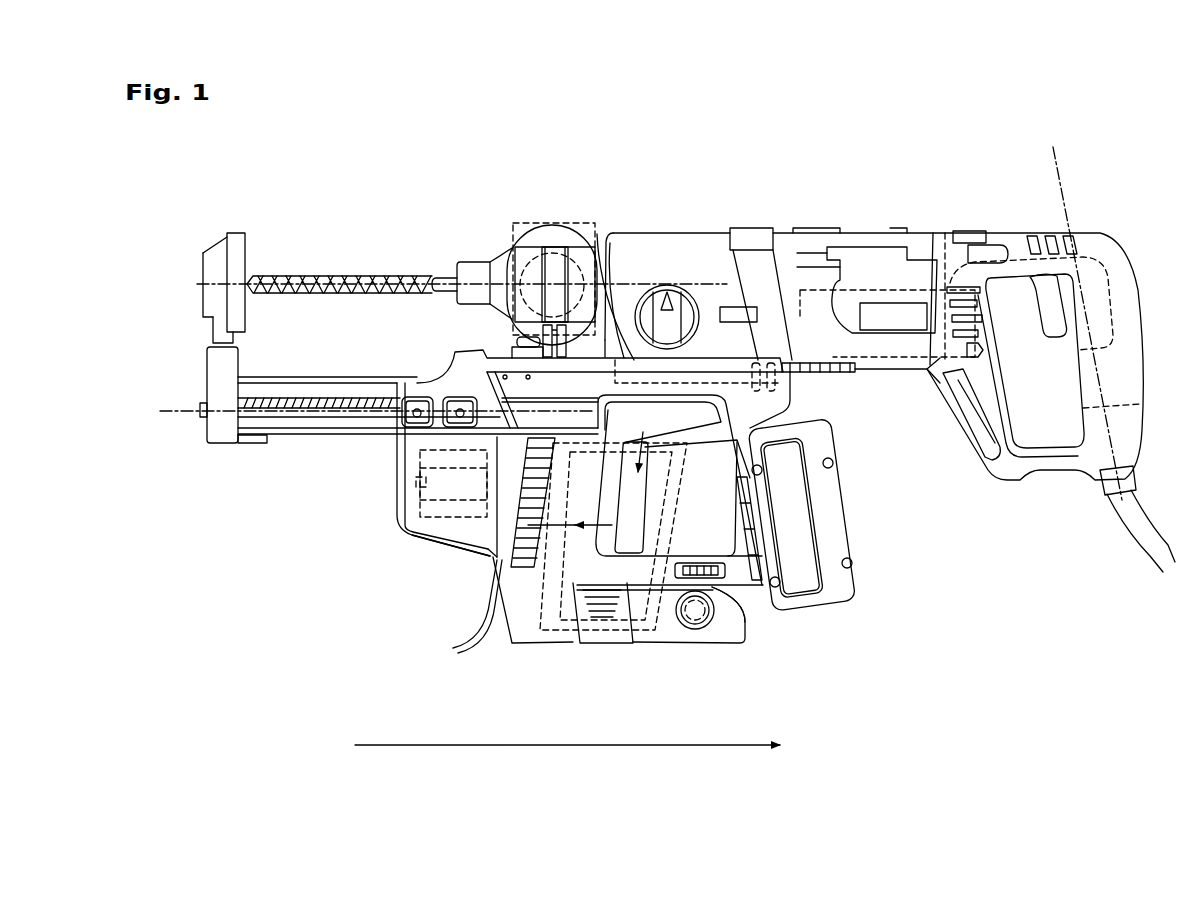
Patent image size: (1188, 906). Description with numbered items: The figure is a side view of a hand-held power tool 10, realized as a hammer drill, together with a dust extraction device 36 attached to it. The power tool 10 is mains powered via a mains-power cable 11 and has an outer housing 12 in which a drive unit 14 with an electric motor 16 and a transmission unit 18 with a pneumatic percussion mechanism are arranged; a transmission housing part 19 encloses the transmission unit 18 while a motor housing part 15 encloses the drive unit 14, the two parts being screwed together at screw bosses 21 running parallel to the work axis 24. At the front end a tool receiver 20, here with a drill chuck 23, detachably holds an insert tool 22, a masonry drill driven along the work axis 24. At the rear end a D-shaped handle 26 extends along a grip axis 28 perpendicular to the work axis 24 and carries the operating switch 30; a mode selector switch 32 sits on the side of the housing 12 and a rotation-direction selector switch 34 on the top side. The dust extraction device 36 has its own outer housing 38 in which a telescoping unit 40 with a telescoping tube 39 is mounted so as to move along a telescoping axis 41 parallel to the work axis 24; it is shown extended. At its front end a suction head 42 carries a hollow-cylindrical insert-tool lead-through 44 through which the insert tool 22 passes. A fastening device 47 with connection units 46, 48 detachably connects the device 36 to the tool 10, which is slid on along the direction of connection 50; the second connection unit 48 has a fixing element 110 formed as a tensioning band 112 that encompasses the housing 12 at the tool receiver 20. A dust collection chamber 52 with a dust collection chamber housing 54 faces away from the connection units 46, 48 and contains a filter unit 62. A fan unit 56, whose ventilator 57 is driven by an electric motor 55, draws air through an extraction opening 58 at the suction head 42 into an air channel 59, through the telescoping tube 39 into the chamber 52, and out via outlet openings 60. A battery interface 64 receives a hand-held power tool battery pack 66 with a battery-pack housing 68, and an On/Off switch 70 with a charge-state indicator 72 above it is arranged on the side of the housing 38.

The hand-held power tool 10 is at (973, 168).
The mains-power cable 11 is at (1130, 540).
The housing 12 is at (848, 245).
The drive unit 14 is at (810, 237).
The motor housing part 15 is at (890, 300).
The electric motor 16 is at (940, 245).
The transmission unit 18 is at (624, 355).
The transmission housing part 19 is at (710, 250).
The tool receiver 20 is at (485, 250).
The screw bosses 21 is at (845, 377).
The insert tool 22 is at (378, 275).
The drill chuck 23 is at (475, 268).
The work axis 24 is at (318, 275).
The handle 26 is at (1120, 232).
The grip axis 28 is at (1066, 197).
The operating switch 30 is at (1060, 304).
The mode selector switch 32 is at (666, 300).
The rotation-direction selector switch 34 is at (985, 238).
The dust extraction device 36 is at (845, 636).
The housing 38 is at (527, 640).
The telescoping tube 39 is at (285, 385).
The telescoping unit 40 is at (322, 393).
The telescoping axis 41 is at (175, 412).
The suction head 42 is at (205, 250).
The insert-tool lead-through 44 is at (197, 258).
The connection unit 46 is at (596, 235).
The fastening device 47 is at (812, 407).
The second connection unit 48 is at (527, 222).
The direction of connection 50 is at (441, 745).
The dust collection chamber 52 is at (640, 630).
The dust collection chamber housing 54 is at (605, 625).
The electric motor 55 is at (417, 482).
The fan unit 56 is at (475, 563).
The ventilator 57 is at (490, 560).
The extraction opening 58 is at (197, 273).
The air channel 59 is at (425, 375).
The outlet openings 60 is at (455, 648).
The filter unit 62 is at (556, 640).
The battery interface 64 is at (758, 588).
The hand-held power tool battery pack 66 is at (856, 492).
The battery-pack housing 68 is at (848, 583).
The On/Off switch 70 is at (693, 615).
The charge-state indicator 72 is at (745, 585).
The fixing element 110 is at (553, 250).
The tensioning band 112 is at (555, 284).